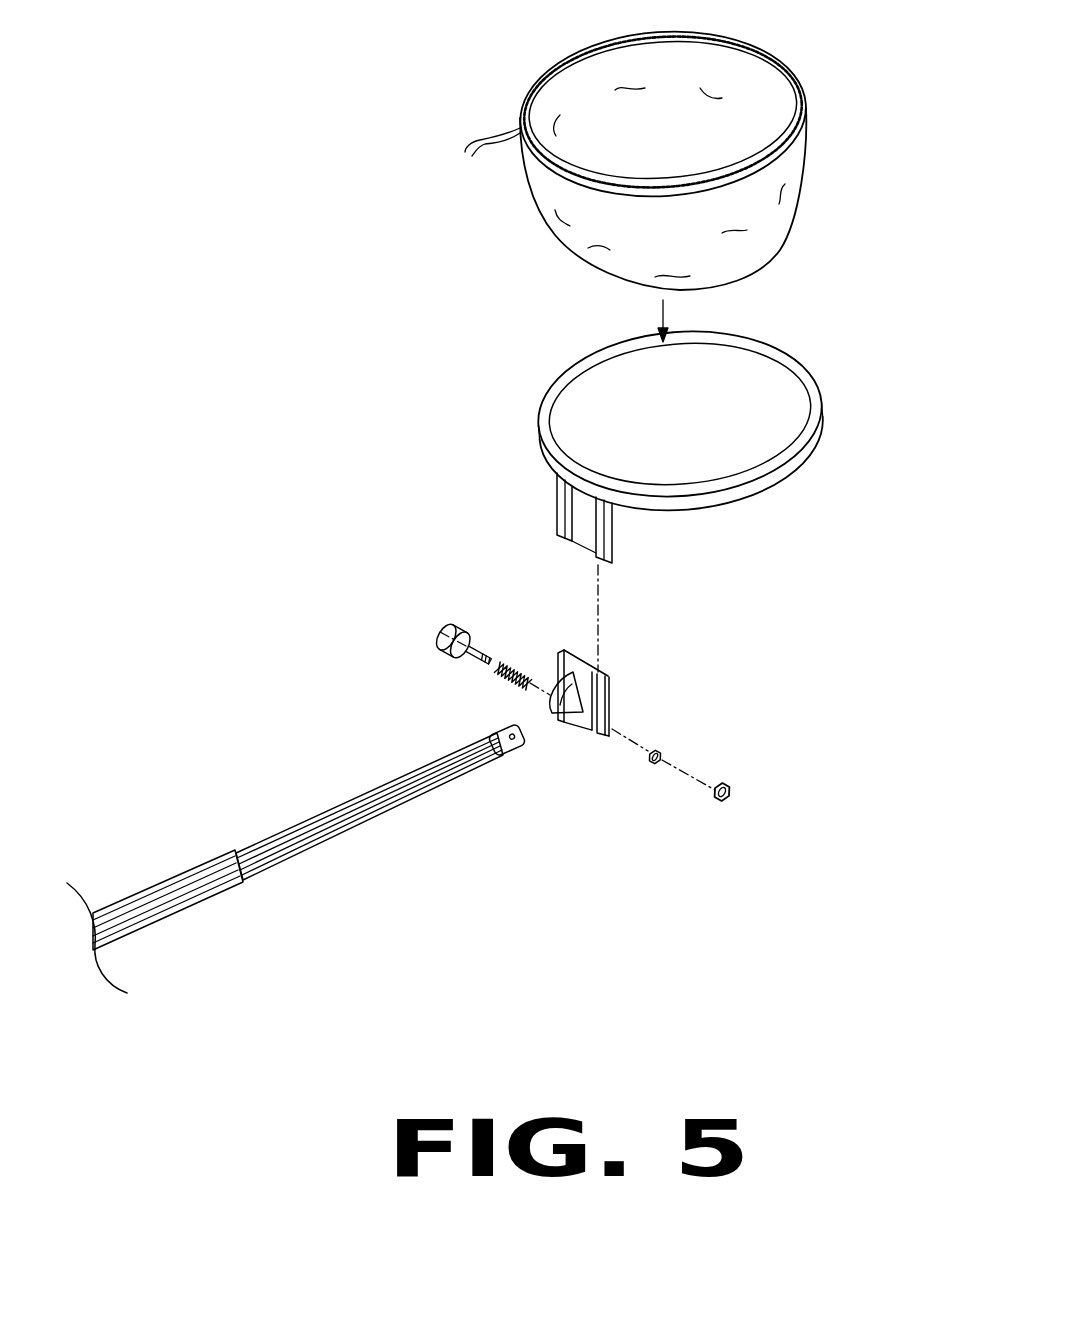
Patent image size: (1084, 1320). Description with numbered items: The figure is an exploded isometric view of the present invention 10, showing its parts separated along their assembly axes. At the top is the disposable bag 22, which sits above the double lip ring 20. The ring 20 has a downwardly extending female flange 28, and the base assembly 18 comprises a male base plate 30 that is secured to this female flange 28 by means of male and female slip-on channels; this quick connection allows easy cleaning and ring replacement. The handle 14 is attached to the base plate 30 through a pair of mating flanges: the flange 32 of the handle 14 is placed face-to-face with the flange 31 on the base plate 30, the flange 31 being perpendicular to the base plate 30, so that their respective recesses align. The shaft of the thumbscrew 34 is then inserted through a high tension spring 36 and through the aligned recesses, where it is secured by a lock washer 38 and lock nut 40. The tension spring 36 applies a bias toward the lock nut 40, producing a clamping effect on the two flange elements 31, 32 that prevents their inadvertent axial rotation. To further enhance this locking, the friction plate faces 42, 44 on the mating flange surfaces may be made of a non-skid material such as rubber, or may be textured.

The present invention 10 is at (853, 193).
The handle 14 is at (212, 897).
The base assembly 18 is at (608, 557).
The double lip ring 20 is at (578, 380).
The disposable bag 22 is at (760, 270).
The female flange 28 is at (607, 520).
The male base plate 30 is at (612, 706).
The flange 31 is at (573, 728).
The flange 32 is at (515, 727).
The thumbscrew 34 is at (453, 622).
The high tension spring 36 is at (497, 677).
The lock washer 38 is at (652, 761).
The lock nut 40 is at (728, 790).
The friction plate face 42 is at (535, 692).
The friction plate face 44 is at (622, 736).